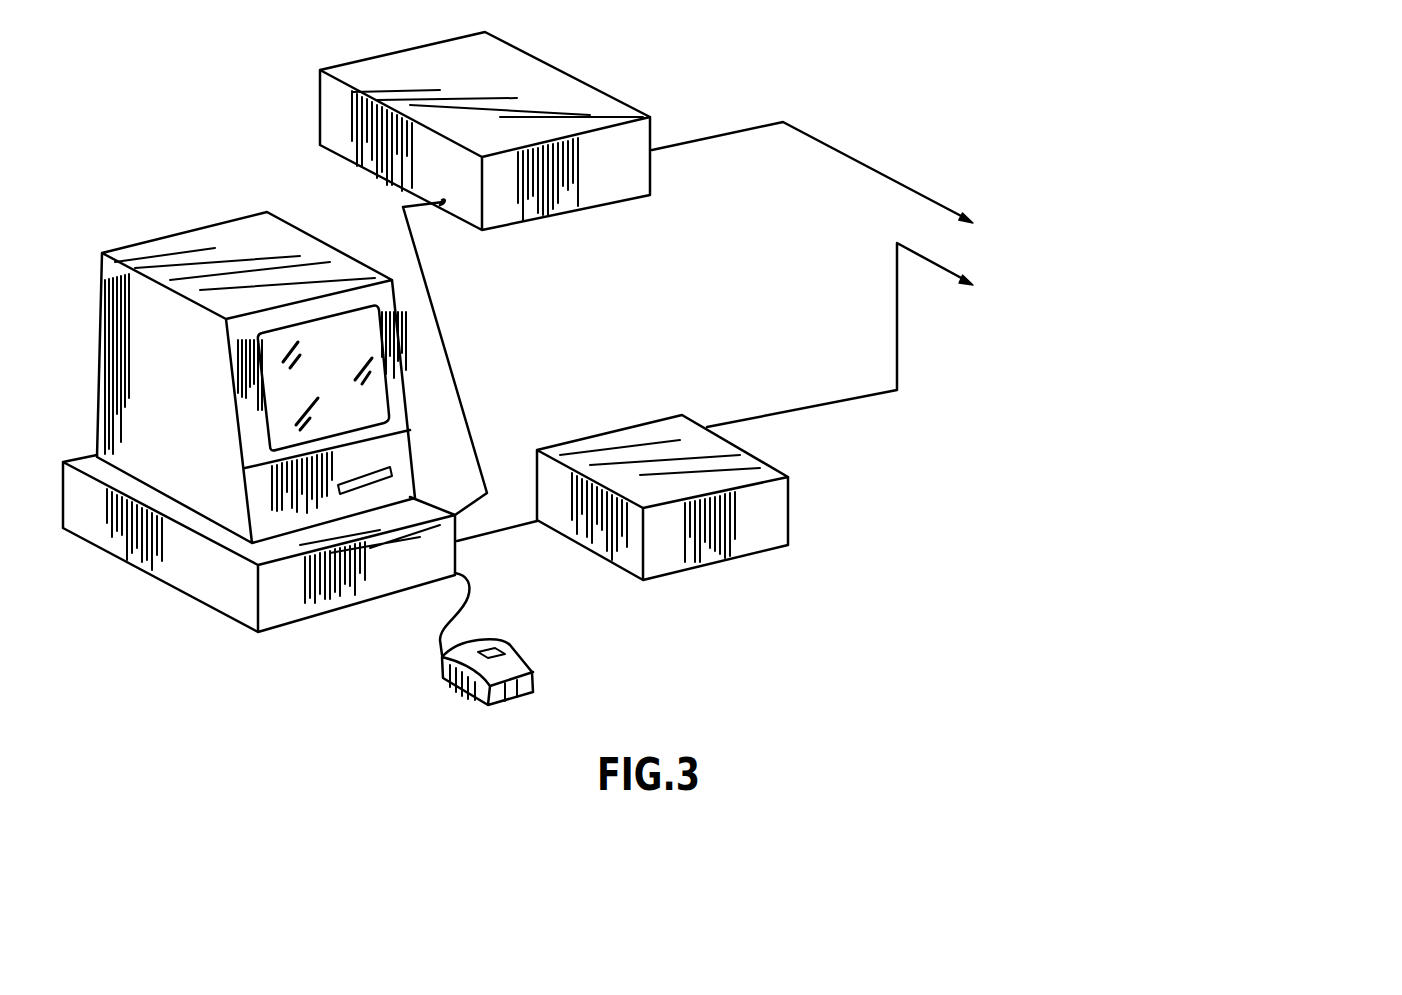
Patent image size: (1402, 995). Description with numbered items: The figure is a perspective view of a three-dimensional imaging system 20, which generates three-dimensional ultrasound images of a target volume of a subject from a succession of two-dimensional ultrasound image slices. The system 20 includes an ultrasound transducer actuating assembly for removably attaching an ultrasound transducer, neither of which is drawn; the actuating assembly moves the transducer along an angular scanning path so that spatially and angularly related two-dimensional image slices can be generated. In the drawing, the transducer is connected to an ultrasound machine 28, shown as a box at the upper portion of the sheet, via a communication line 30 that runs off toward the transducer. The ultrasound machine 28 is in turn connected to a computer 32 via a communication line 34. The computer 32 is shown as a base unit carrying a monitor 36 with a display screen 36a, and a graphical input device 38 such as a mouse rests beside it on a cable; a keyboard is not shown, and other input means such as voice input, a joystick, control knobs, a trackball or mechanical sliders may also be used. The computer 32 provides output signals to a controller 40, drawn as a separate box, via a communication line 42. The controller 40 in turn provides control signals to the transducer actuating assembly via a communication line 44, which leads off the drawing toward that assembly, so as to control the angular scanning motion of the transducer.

The three-dimensional imaging system 20 is at (840, 127).
The ultrasound machine 28 is at (558, 83).
The communication line 30 is at (837, 152).
The computer 32 is at (140, 584).
The communication line 34 is at (448, 357).
The monitor 36 is at (256, 347).
The display screen 36a is at (280, 398).
The graphical input device 38 is at (517, 650).
The controller 40 is at (748, 530).
The communication line 42 is at (505, 532).
The communication line 44 is at (778, 405).